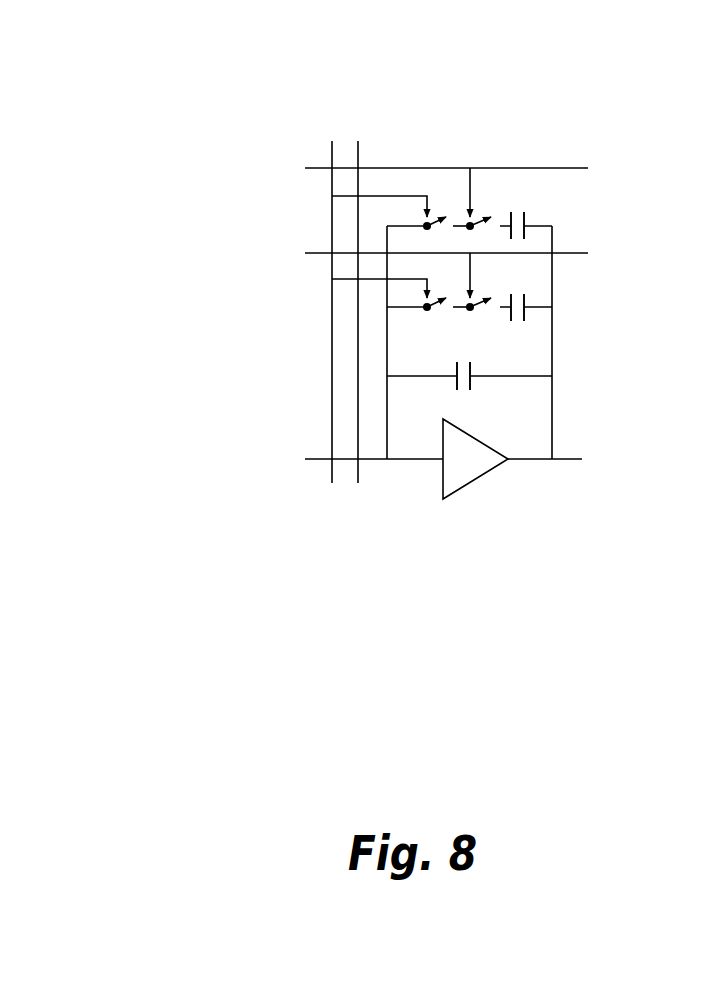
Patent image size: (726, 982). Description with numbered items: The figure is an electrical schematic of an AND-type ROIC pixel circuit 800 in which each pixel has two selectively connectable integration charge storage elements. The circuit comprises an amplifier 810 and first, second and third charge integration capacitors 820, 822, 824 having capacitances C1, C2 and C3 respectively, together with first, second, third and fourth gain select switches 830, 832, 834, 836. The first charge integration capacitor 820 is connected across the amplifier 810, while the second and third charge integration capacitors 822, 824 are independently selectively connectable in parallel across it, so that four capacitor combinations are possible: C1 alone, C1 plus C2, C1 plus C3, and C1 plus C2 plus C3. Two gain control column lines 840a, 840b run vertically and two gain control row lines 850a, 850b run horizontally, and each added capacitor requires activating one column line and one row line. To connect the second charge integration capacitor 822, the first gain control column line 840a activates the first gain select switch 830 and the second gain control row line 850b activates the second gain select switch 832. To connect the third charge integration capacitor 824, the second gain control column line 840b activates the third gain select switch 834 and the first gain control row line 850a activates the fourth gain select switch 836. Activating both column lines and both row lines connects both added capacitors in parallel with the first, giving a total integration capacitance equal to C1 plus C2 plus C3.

The AND-type ROIC pixel circuit 800 is at (208, 58).
The amplifier 810 is at (473, 472).
The first charge integration capacitor 820 is at (474, 366).
The second charge integration capacitor 822 is at (528, 303).
The third charge integration capacitor 824 is at (527, 215).
The first gain select switch 830 is at (427, 311).
The second gain select switch 832 is at (468, 297).
The third gain select switch 834 is at (431, 212).
The fourth gain select switch 836 is at (474, 212).
The first gain control column line 840a is at (332, 377).
The second gain control column line 840b is at (358, 417).
The first gain control row line 850a is at (317, 167).
The second gain control row line 850b is at (317, 252).
The capacitance of first charge integration capacitor C1 is at (476, 388).
The capacitance of second charge integration capacitor C2 is at (534, 317).
The capacitance of third charge integration capacitor C3 is at (531, 235).